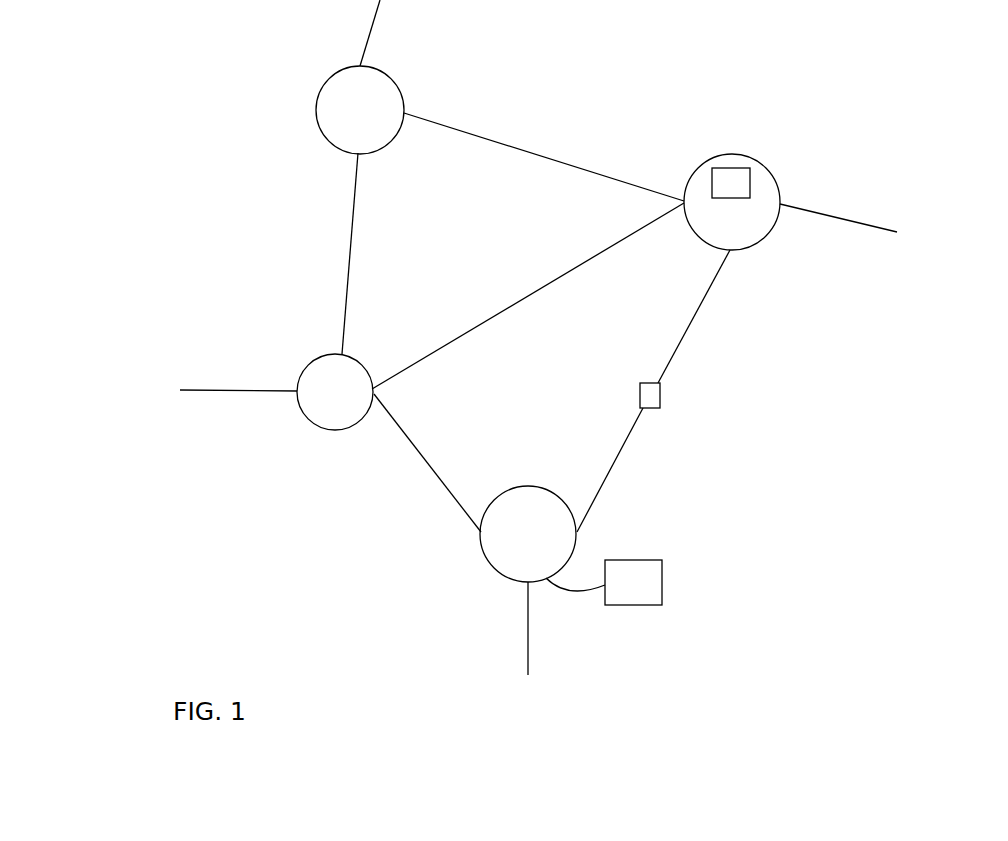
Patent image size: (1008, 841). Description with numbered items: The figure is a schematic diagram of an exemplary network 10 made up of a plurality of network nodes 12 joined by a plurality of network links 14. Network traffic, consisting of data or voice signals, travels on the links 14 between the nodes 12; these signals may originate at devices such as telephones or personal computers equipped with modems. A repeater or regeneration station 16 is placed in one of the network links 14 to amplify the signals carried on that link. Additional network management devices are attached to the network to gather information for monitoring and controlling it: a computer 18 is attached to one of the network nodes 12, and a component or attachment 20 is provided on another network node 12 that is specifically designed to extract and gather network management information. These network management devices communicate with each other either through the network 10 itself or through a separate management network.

The network 10 is at (140, 103).
The network node 12 is at (326, 86).
The network link 14 is at (346, 228).
The repeater or regeneration station 16 is at (663, 393).
The computer 18 is at (665, 583).
The component or attachment 20 is at (754, 185).